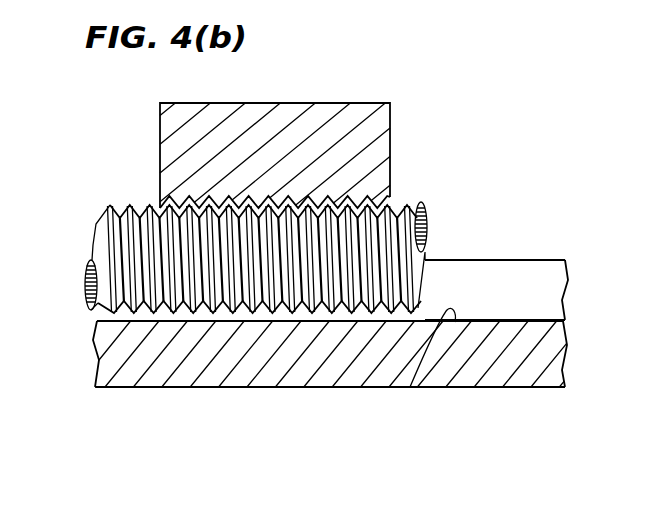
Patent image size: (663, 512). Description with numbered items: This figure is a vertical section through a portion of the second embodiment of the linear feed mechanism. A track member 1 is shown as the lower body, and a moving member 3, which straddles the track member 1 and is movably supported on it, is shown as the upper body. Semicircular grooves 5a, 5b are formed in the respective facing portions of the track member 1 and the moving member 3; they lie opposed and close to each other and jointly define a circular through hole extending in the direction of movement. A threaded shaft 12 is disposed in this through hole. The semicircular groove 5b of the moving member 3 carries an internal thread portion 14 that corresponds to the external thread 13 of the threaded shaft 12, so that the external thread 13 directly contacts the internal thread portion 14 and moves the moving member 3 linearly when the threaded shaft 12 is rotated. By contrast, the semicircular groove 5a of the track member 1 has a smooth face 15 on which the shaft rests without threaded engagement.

The track member 1 is at (289, 367).
The moving member 3 is at (358, 122).
The semicircular groove 5a is at (237, 323).
The semicircular groove 5b is at (257, 200).
The threaded shaft 12 is at (362, 278).
The external thread 13 is at (140, 210).
The internal thread portion 14 is at (283, 203).
The smooth face 15 is at (410, 387).